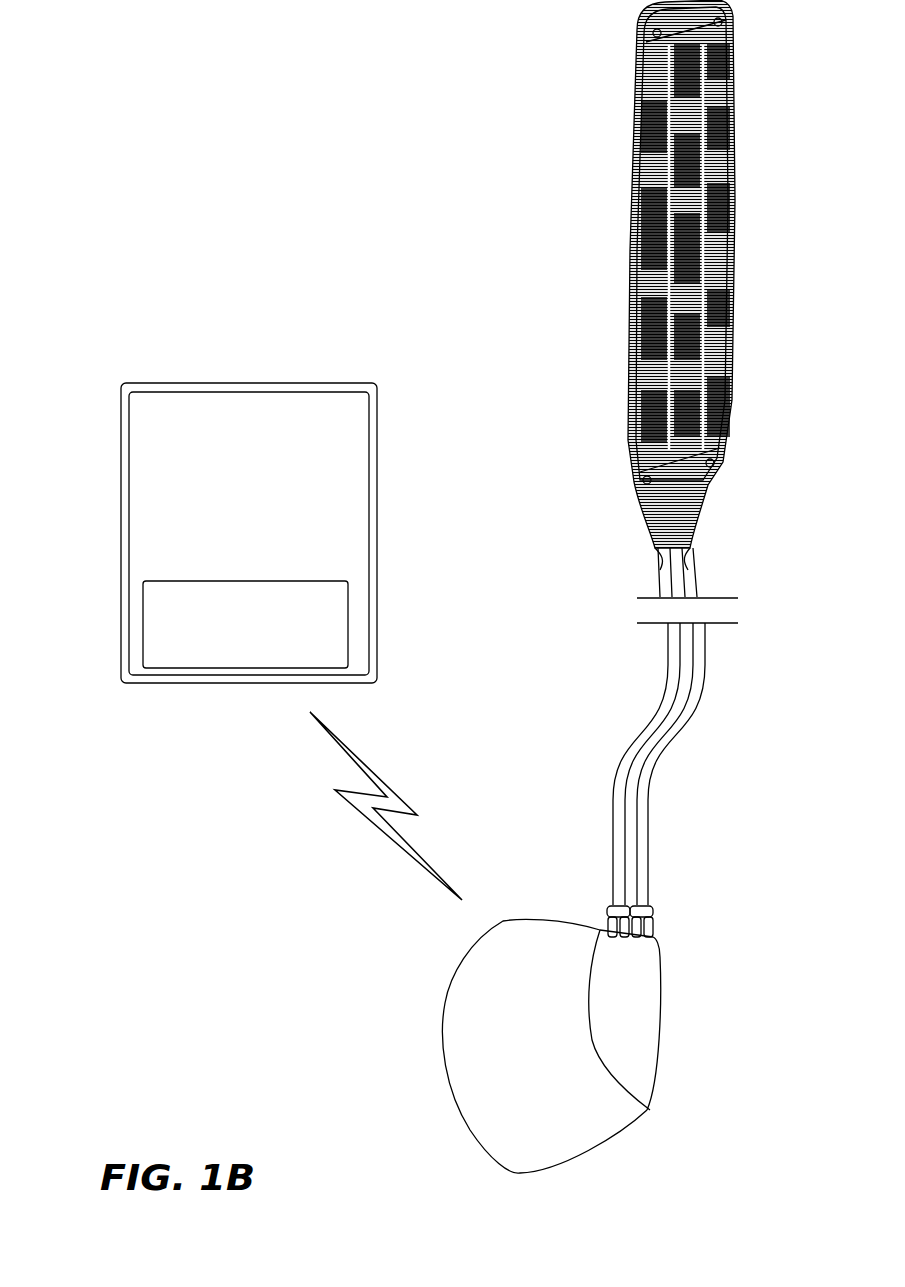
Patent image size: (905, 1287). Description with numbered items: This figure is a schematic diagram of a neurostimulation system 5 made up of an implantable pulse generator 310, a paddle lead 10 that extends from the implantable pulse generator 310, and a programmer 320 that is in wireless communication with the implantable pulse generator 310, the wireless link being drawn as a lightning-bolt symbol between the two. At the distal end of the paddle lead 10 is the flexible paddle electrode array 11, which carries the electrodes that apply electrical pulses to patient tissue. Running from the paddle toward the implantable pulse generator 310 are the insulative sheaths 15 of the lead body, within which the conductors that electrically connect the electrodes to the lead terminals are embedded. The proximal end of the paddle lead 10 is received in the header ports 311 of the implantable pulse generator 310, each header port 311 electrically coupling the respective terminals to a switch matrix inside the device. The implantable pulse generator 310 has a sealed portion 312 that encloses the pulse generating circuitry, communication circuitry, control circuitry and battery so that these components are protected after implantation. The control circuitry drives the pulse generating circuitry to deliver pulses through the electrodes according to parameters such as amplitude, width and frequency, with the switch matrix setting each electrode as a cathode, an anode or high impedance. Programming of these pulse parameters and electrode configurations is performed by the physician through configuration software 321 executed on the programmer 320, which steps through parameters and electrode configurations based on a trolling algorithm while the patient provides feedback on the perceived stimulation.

The neurostimulation system 5 is at (153, 66).
The paddle lead 10 is at (814, 754).
The flexible paddle electrode array 11 is at (570, 88).
The insulative sheaths 15 is at (660, 722).
The implantable pulse generator 310 is at (684, 1124).
The header ports 311 is at (606, 912).
The sealed portion 312 is at (665, 1030).
The programmer 320 is at (121, 511).
The configuration software 321 is at (348, 626).